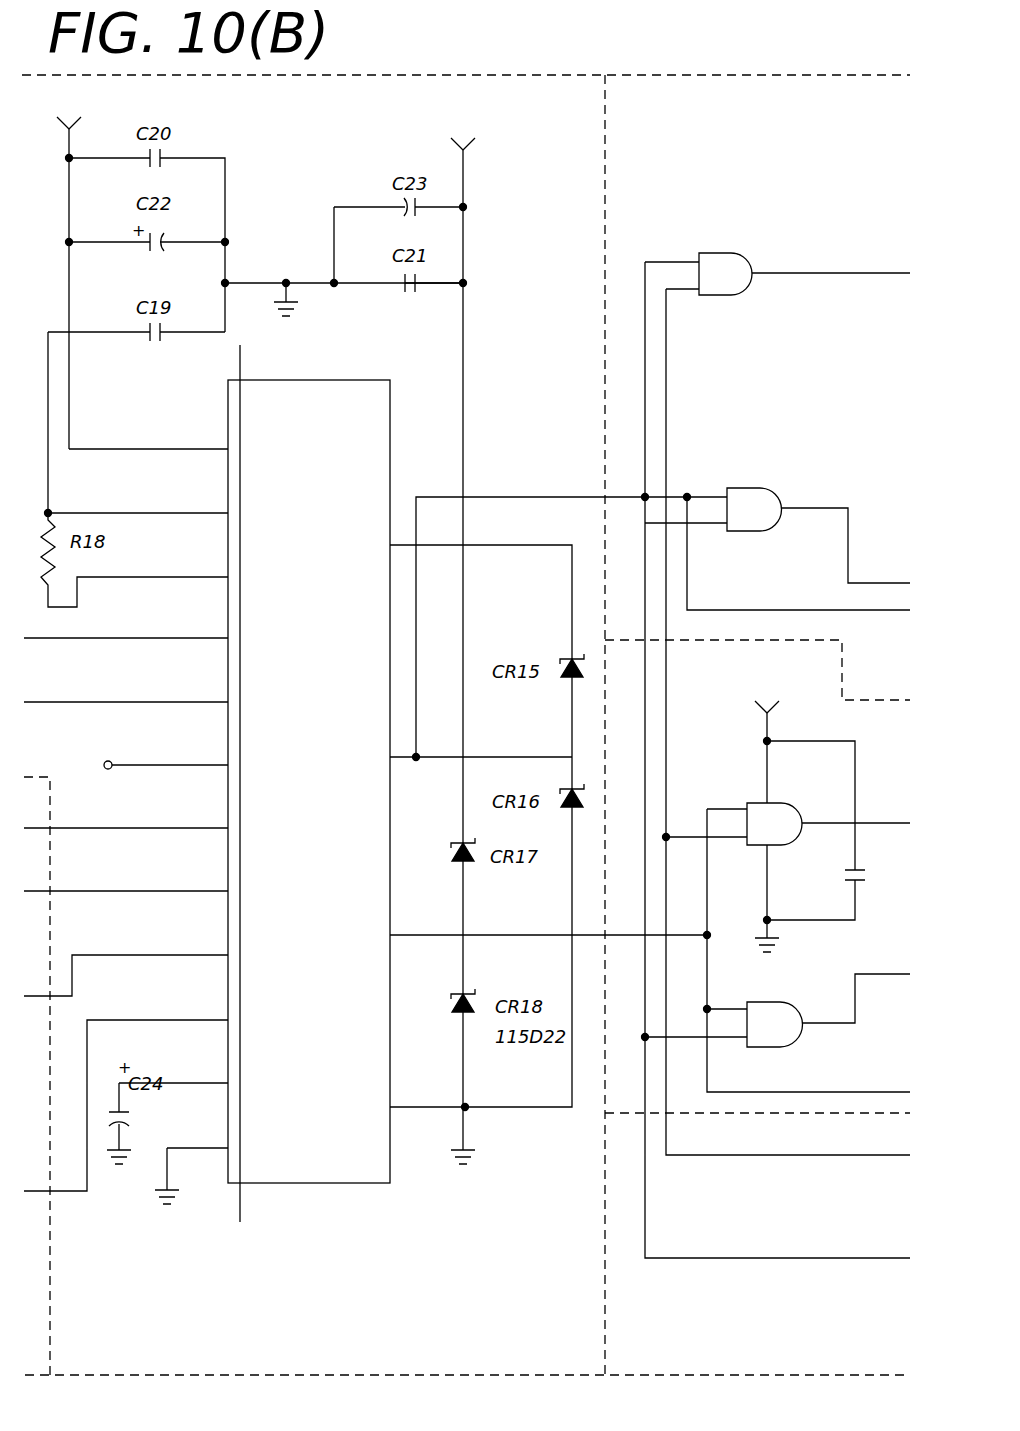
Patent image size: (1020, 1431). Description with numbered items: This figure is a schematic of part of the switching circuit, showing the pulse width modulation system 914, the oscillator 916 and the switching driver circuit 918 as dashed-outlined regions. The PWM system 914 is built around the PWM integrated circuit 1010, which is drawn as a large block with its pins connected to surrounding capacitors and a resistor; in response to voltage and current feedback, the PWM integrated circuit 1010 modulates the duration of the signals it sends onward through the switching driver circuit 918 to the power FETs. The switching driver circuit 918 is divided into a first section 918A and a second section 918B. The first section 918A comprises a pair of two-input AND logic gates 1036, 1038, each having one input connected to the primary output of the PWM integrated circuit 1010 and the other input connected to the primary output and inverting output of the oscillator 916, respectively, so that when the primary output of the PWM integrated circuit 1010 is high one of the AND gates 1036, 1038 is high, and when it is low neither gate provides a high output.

The pulse width modulation (PWM) system 914 is at (355, 75).
The oscillator 916 is at (688, 1373).
The switching driver circuit 918 is at (605, 186).
The first section of switching driver circuit 918A is at (776, 665).
The second section of switching driver circuit 918B is at (722, 640).
The AND logic gate 1036 is at (705, 250).
The AND logic gate 1038 is at (740, 487).
The PWM integrated circuit 1010 is at (336, 1183).